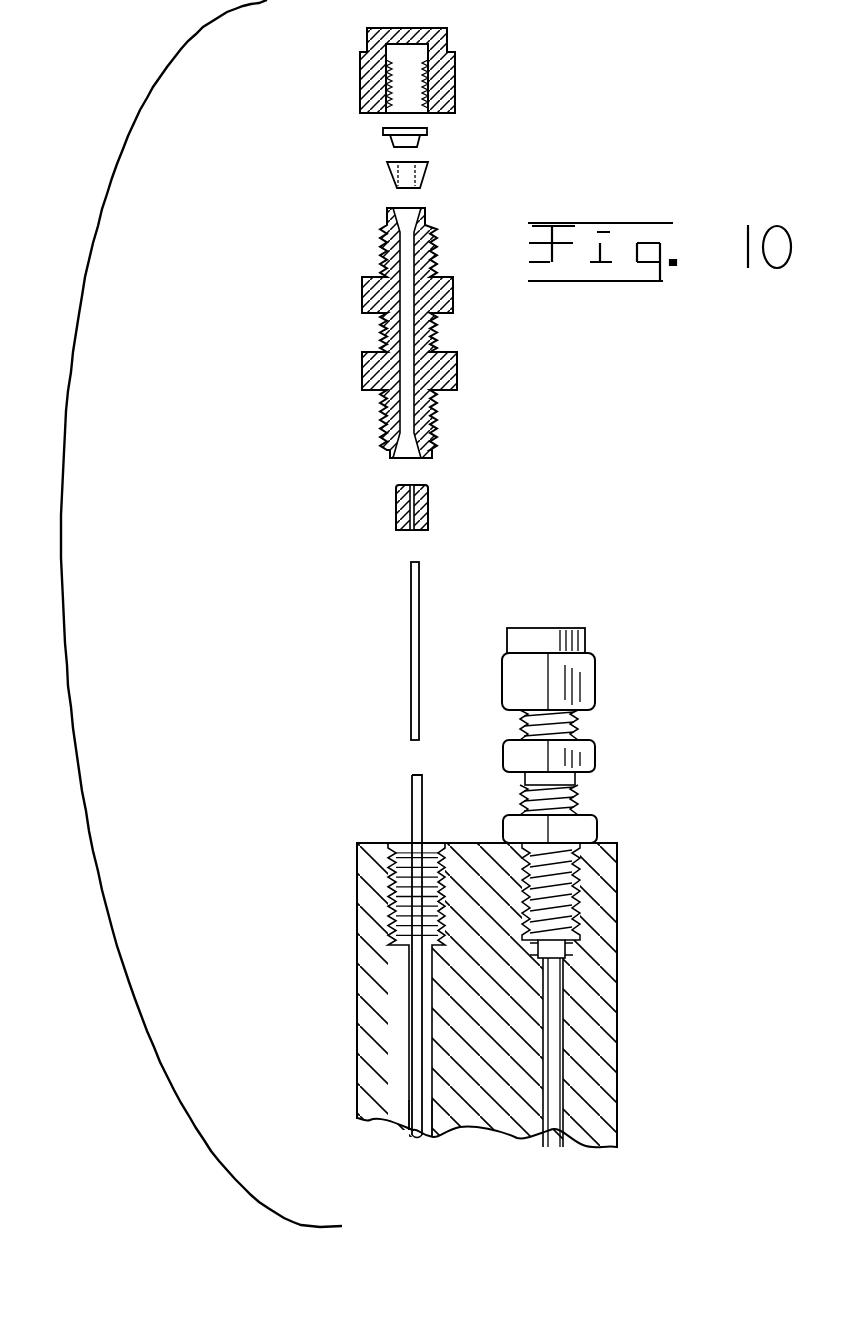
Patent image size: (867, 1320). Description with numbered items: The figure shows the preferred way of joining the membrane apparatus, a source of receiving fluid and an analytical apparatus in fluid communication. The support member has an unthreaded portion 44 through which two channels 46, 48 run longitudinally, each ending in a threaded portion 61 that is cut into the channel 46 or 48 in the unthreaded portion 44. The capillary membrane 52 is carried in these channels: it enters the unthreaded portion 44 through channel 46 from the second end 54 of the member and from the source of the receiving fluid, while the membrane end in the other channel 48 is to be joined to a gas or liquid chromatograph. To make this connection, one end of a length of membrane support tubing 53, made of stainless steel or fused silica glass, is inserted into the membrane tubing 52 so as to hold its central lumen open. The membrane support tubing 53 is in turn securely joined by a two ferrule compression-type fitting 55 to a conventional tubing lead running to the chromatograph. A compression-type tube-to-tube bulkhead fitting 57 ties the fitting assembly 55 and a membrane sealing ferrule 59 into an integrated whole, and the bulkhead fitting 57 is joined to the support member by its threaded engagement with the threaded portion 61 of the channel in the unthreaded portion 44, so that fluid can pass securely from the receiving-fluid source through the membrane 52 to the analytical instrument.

The unthreaded portion 44 is at (335, 1000).
The channel 46 is at (570, 1040).
The channel 48 is at (421, 1130).
The membrane 52 is at (410, 822).
The membrane support tubing 53 is at (411, 666).
The second end 54 is at (386, 843).
The two ferrule compression-type fitting 55 is at (350, 120).
The compression-type tube-to-tube bulkhead fitting 57 is at (337, 292).
The membrane sealing ferrule 59 is at (395, 505).
The threaded portion 61 is at (392, 925).